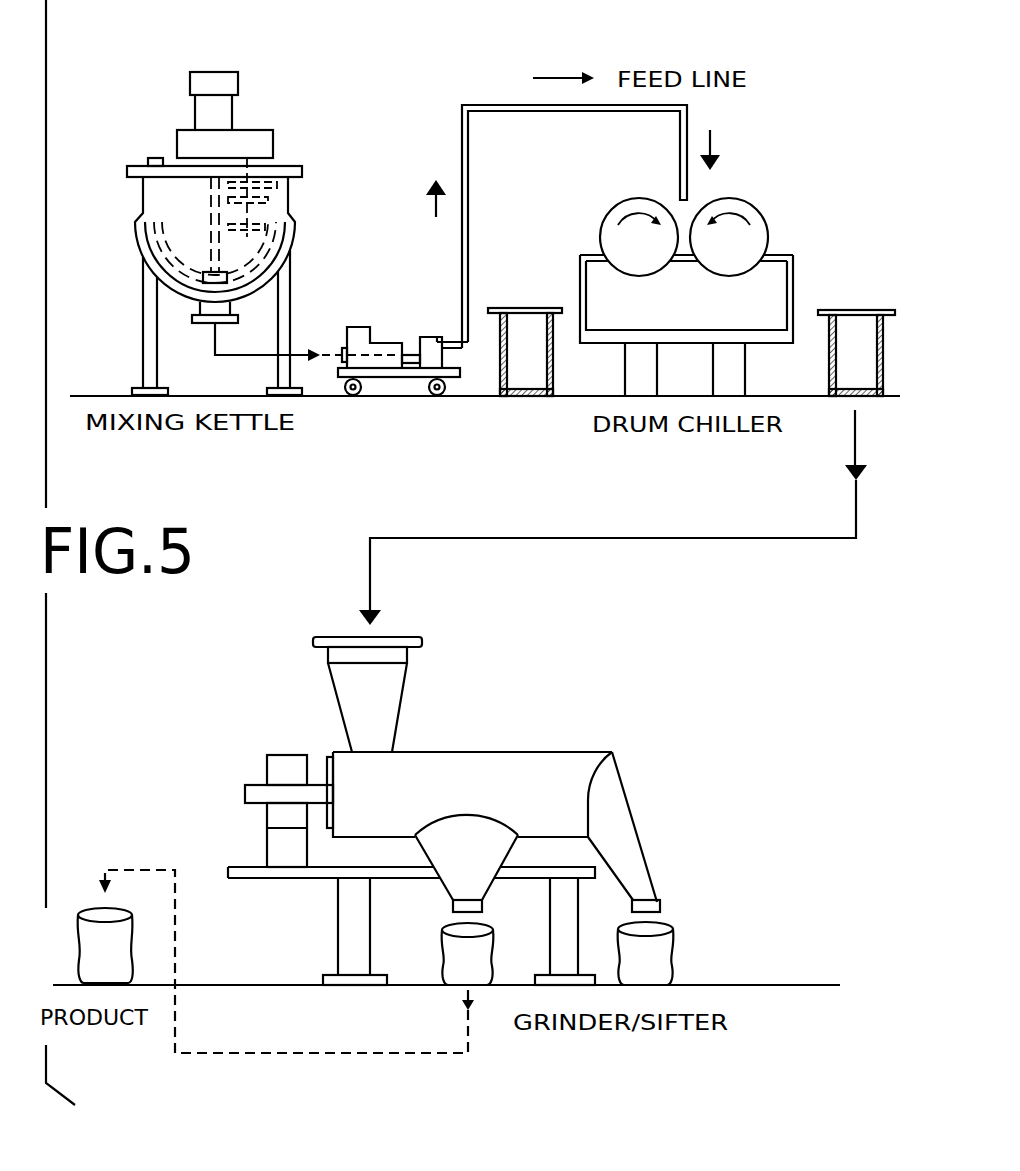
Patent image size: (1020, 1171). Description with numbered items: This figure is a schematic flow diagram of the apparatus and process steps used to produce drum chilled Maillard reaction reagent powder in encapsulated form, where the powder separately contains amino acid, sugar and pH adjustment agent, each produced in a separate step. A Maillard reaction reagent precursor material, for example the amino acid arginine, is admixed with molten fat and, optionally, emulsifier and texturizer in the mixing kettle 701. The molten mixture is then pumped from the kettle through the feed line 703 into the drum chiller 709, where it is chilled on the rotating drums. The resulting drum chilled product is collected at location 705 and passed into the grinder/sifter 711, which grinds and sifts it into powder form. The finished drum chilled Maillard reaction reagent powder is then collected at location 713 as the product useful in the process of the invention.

The mixing kettle 701 is at (158, 196).
The feed line 703 is at (487, 108).
The collection location 705 is at (850, 322).
The drum chiller 709 is at (612, 353).
The grinder/sifter 711 is at (468, 768).
The collection location 713 is at (92, 967).